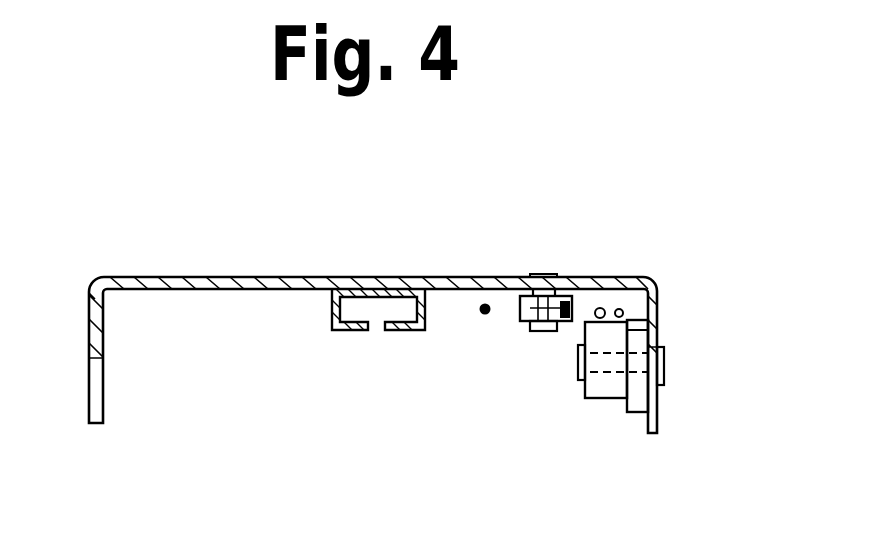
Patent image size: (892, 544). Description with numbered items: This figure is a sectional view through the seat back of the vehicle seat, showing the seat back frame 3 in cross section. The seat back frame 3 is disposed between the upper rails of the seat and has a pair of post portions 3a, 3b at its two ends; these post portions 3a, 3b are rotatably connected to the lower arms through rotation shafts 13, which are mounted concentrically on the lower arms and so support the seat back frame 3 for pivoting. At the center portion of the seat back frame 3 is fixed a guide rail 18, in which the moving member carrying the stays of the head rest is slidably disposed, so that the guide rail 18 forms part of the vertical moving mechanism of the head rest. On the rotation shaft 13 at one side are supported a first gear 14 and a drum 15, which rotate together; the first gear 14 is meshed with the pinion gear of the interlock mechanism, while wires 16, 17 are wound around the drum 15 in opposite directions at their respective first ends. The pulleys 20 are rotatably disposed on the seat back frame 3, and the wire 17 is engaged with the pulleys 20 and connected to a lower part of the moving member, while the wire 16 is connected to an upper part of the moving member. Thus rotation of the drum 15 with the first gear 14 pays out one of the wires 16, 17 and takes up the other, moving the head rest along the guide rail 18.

The seat back frame 3 is at (435, 279).
The post portion 3a is at (104, 343).
The post portion 3b is at (658, 322).
The rotation shaft 13 is at (664, 364).
The first gear 14 is at (642, 393).
The drum 15 is at (603, 392).
The wire 16 is at (621, 309).
The wire 17 is at (600, 308).
The guide rail 18 is at (337, 330).
The pulley 20 is at (520, 311).